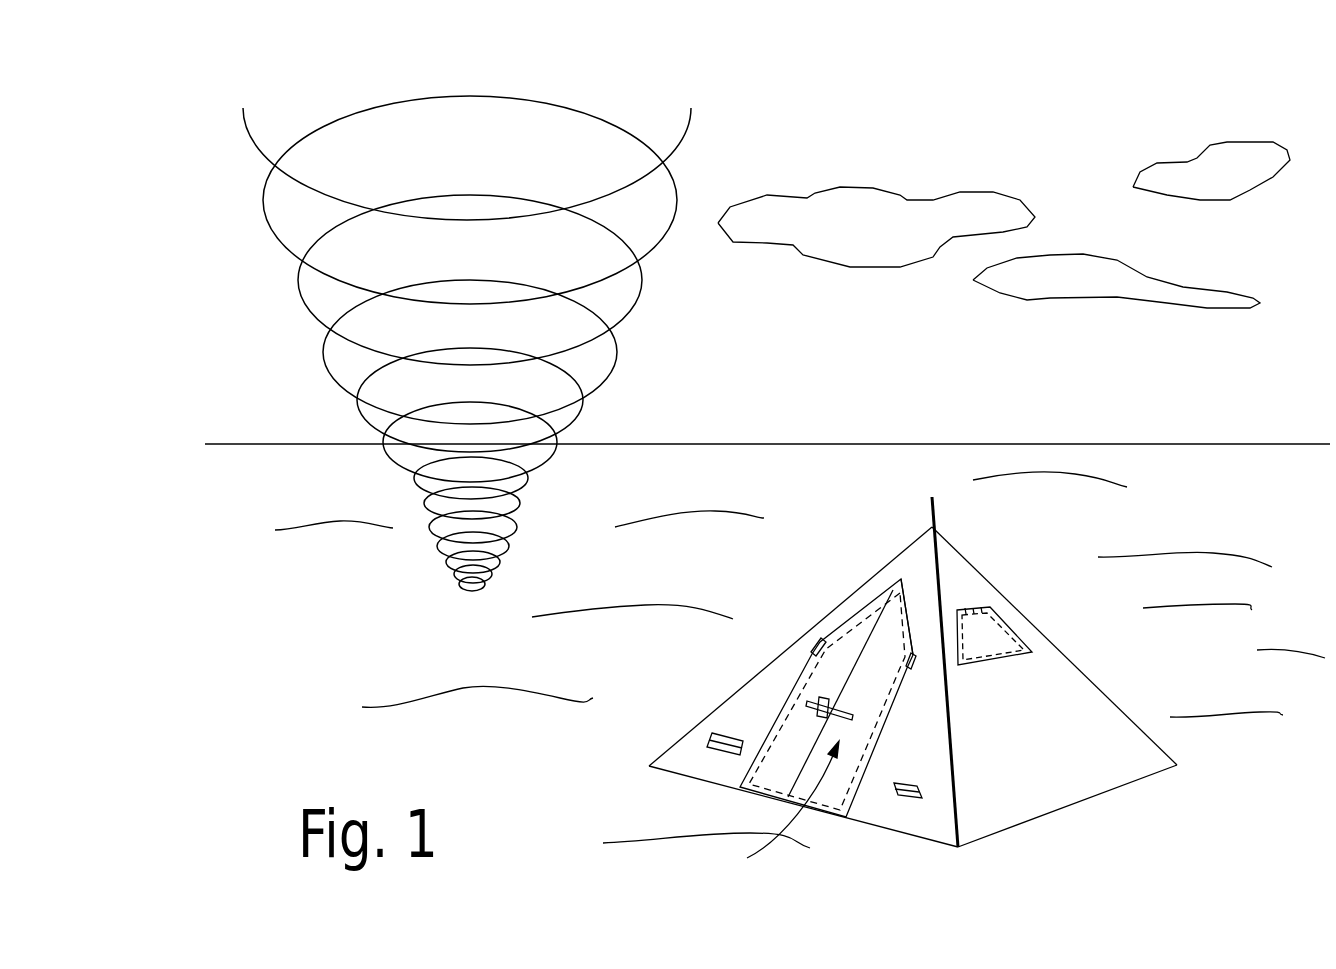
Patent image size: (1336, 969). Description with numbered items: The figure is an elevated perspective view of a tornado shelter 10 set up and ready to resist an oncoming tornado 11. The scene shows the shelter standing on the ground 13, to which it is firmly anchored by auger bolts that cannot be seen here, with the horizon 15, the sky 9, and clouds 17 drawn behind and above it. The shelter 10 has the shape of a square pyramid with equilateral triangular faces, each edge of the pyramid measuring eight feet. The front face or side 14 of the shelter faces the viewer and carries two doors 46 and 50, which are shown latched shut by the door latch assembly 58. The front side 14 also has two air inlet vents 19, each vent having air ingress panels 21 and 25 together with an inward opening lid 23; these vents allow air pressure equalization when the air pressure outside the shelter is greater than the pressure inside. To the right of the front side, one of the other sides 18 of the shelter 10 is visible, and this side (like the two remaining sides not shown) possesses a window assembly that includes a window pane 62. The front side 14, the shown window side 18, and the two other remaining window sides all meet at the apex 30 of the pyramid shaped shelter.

The sky 9 is at (892, 364).
The tornado shelter 10 is at (945, 691).
The tornado 11 is at (628, 360).
The ground 13 is at (1214, 509).
The front face or side 14 is at (791, 659).
The horizon 15 is at (734, 443).
The clouds 17 is at (1245, 158).
The side 18 is at (1057, 690).
The air inlet vents 19 is at (827, 770).
The air ingress panel 21 is at (824, 771).
The inward opening lid 23 is at (827, 743).
The air ingress panel 25 is at (709, 741).
The apex 30 is at (932, 497).
The door 46 is at (862, 621).
The door 50 is at (901, 580).
The door latch assembly 58 is at (777, 806).
The window pane 62 is at (980, 630).